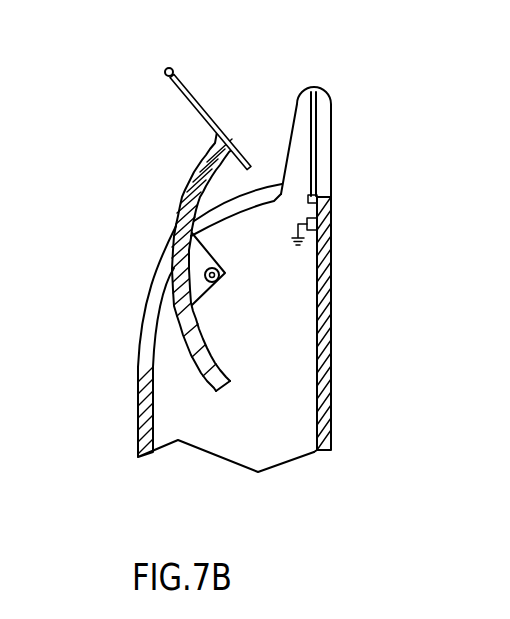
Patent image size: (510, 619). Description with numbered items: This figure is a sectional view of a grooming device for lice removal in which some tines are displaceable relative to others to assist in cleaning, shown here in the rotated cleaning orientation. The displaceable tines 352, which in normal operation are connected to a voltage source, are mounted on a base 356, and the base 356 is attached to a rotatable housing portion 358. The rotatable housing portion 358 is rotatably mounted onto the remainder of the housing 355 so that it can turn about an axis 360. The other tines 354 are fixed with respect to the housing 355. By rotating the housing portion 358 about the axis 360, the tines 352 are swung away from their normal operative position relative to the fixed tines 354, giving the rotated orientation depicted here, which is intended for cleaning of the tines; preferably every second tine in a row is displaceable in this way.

The tines 352 is at (190, 95).
The tines 354 is at (315, 128).
The housing 355 is at (138, 393).
The base 356 is at (233, 139).
The rotatable housing portion 358 is at (172, 225).
The axis 360 is at (221, 266).